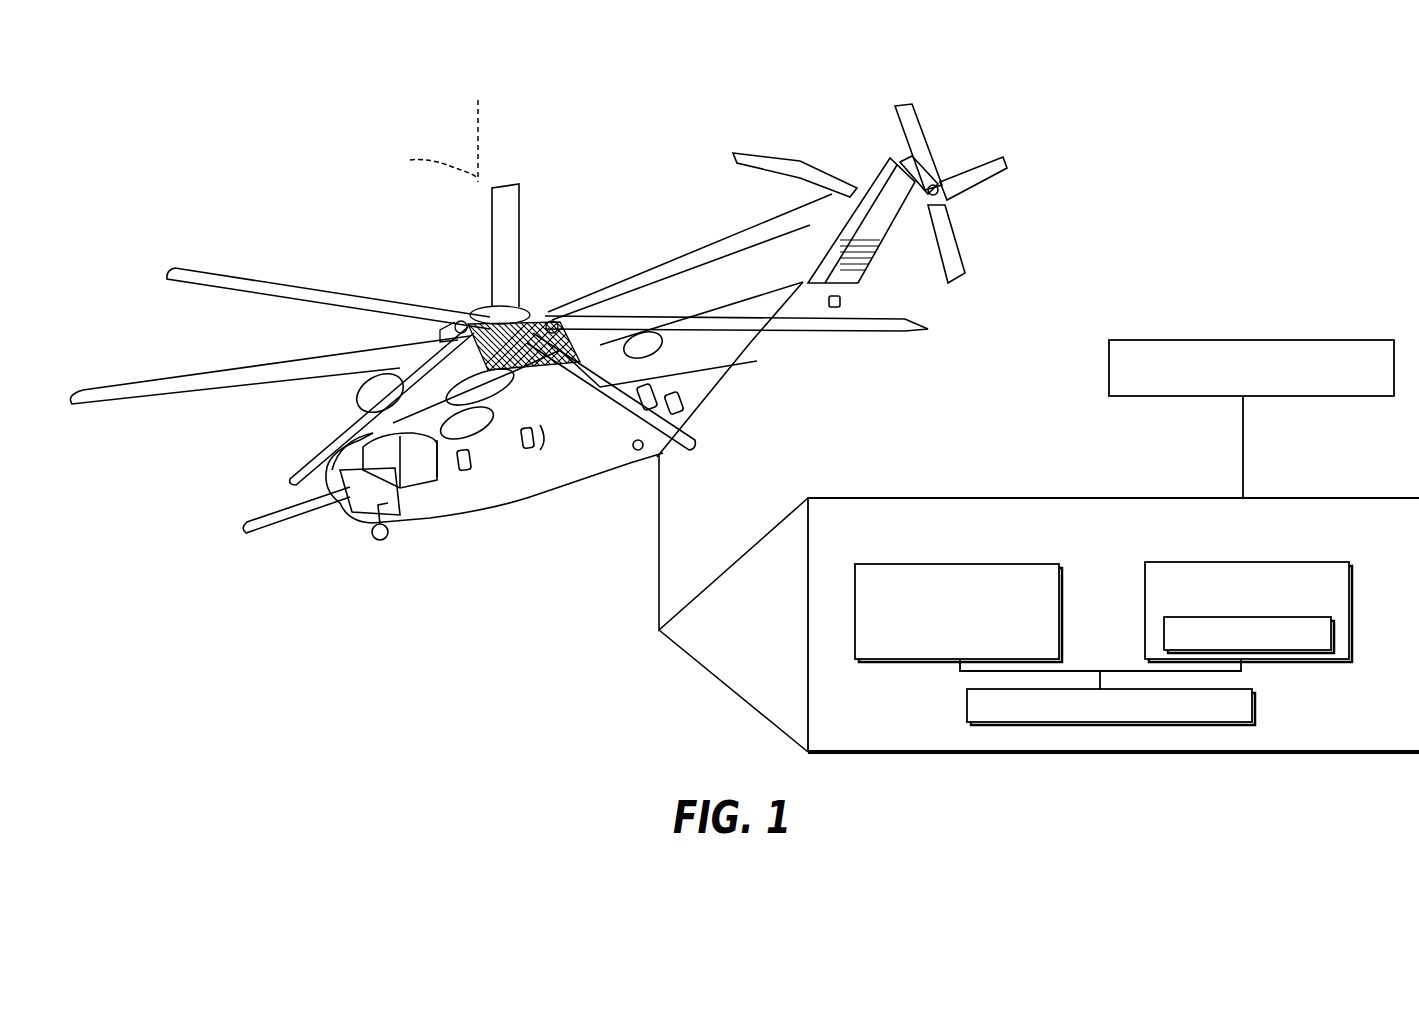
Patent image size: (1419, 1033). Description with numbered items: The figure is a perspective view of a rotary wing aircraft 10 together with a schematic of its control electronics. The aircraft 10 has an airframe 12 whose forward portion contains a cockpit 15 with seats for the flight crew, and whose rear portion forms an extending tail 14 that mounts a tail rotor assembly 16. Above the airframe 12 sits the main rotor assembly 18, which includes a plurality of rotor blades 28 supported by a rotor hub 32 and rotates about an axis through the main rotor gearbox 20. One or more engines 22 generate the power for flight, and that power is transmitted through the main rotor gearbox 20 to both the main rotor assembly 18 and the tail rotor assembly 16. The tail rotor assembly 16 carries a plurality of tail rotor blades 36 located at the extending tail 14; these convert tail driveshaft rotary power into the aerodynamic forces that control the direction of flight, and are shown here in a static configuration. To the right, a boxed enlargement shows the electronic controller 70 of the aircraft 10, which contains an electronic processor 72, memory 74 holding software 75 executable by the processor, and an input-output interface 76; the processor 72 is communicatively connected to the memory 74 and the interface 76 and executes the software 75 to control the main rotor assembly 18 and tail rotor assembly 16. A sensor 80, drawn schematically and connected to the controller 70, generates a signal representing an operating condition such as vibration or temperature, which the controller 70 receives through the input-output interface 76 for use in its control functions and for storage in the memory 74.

The rotary wing aircraft 10 is at (612, 218).
The airframe 12 is at (695, 408).
The extending tail 14 is at (747, 300).
The cockpit 15 is at (420, 462).
The tail rotor assembly 16 is at (955, 205).
The main rotor assembly 18 is at (477, 297).
The main rotor gearbox 20 is at (520, 370).
The engines 22 is at (385, 367).
The rotor blades 28 is at (513, 220).
The rotor hub 32 is at (470, 313).
The tail rotor blades 36 is at (913, 127).
The electronic controller 70 is at (1008, 468).
The electronic processor 72 is at (1061, 609).
The memory 74 is at (1351, 577).
The software 75 is at (1333, 632).
The input-output interface 76 is at (1254, 708).
The sensor 80 is at (1251, 419).